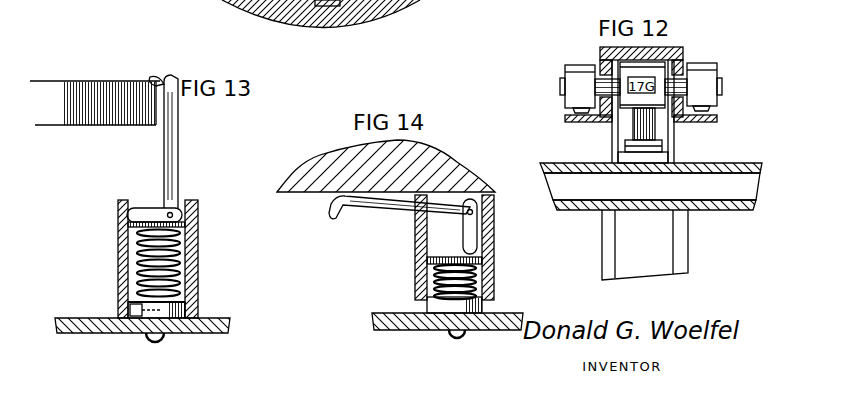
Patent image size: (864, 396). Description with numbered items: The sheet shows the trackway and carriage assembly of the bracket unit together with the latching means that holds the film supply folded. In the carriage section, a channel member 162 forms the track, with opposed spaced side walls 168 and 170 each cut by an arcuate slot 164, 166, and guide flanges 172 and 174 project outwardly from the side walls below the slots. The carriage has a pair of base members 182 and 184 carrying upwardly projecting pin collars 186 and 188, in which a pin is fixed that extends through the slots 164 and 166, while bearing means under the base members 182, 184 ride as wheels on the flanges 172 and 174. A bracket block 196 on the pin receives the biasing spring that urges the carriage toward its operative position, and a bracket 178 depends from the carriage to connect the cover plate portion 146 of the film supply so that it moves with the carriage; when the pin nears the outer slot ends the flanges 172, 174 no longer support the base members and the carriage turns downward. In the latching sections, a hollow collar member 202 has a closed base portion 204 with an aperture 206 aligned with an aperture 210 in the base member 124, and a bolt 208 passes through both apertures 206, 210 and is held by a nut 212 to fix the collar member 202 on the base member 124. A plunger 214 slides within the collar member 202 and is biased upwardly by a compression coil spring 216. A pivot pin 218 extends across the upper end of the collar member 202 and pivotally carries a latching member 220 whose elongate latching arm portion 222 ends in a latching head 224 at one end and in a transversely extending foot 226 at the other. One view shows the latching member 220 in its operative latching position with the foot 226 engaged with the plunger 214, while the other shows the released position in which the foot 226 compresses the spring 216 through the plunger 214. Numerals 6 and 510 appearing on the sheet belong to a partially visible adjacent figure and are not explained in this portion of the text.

In FIG. 13, the figure reference 6 is at (97, 8).
In FIG. 13, the cam track 510 is at (392, 3).
In FIG. 13, the cover plate portion 146 is at (115, 81).
In FIG. 13, the latching head 224 is at (152, 73).
In FIG. 13, the latching arm portion 222 is at (178, 76).
In FIG. 13, the latching member 220 is at (183, 137).
In FIG. 14, the latching member 220 is at (375, 193).
In FIG. 13, the foot 226 is at (152, 200).
In FIG. 14, the foot 226 is at (477, 235).
In FIG. 13, the pivot pin 218 is at (180, 203).
In FIG. 13, the compression coil spring 216 is at (140, 244).
In FIG. 14, the compression coil spring 216 is at (478, 288).
In FIG. 13, the plunger 214 is at (186, 224).
In FIG. 14, the plunger 214 is at (430, 262).
In FIG. 13, the collar member 202 is at (199, 259).
In FIG. 13, the nut 212 is at (190, 299).
In FIG. 13, the base portion 204 is at (198, 306).
In FIG. 13, the aperture 206 is at (140, 312).
In FIG. 13, the base member 124 is at (231, 323).
In FIG. 13, the aperture 210 is at (145, 338).
In FIG. 13, the bolt 208 is at (166, 341).
In FIG. 12, the channel member 162 is at (679, 50).
In FIG. 12, the arcuate slot 164 is at (606, 70).
In FIG. 12, the side wall 168 is at (600, 76).
In FIG. 12, the side wall 170 is at (684, 66).
In FIG. 12, the pin collar 188 is at (714, 68).
In FIG. 12, the pin collar 186 is at (565, 80).
In FIG. 12, the base member 182 is at (568, 101).
In FIG. 12, the base member 184 is at (692, 104).
In FIG. 12, the guide flange 172 is at (567, 120).
In FIG. 12, the arcuate slot 166 is at (704, 116).
In FIG. 12, the bracket block 196 is at (627, 112).
In FIG. 12, the guide flange 174 is at (690, 124).
In FIG. 12, the bracket 178 is at (632, 158).